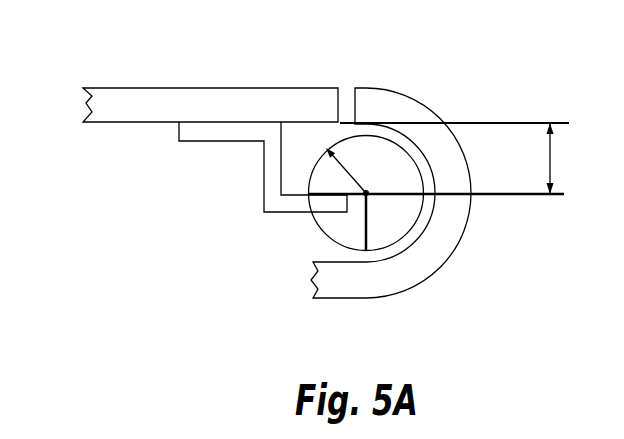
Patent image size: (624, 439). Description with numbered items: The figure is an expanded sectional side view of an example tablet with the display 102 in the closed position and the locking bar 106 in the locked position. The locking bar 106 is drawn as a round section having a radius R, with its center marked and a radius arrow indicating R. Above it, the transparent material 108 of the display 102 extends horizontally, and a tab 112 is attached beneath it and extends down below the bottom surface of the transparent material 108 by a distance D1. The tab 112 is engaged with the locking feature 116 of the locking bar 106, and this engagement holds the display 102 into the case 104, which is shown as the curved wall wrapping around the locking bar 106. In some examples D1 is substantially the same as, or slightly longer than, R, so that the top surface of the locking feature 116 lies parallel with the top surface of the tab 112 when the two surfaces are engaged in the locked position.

The display 102 is at (183, 70).
The case 104 is at (390, 298).
The locking bar 106 is at (408, 148).
The transparent material 108 is at (110, 118).
The tab 112 is at (198, 143).
The locking feature 116 is at (367, 222).